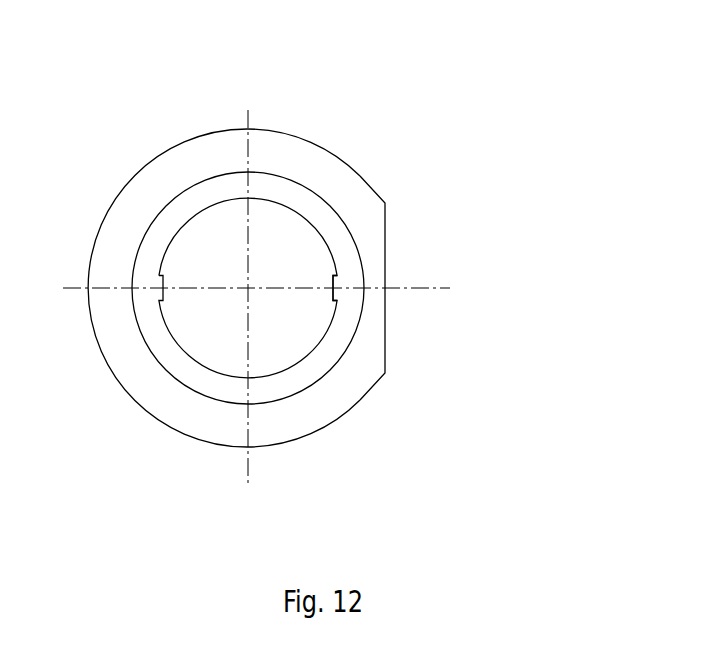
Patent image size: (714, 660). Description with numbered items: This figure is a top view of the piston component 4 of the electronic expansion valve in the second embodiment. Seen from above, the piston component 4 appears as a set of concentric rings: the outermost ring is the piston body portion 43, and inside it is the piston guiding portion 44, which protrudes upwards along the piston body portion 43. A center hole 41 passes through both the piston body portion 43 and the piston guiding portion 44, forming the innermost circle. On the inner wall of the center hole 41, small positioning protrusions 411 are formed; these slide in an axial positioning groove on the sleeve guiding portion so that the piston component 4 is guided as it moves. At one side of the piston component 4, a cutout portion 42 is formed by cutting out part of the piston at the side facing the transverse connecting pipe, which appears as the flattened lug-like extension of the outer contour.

The piston component 4 is at (533, 30).
The center hole 41 is at (277, 237).
The positioning protrusion 411 is at (336, 286).
The cutout portion 42 is at (386, 321).
The piston body portion 43 is at (290, 155).
The piston guiding portion 44 is at (290, 195).